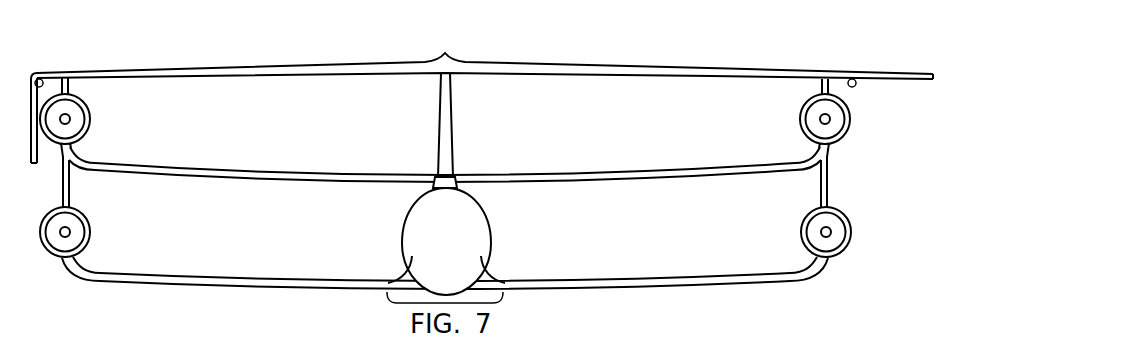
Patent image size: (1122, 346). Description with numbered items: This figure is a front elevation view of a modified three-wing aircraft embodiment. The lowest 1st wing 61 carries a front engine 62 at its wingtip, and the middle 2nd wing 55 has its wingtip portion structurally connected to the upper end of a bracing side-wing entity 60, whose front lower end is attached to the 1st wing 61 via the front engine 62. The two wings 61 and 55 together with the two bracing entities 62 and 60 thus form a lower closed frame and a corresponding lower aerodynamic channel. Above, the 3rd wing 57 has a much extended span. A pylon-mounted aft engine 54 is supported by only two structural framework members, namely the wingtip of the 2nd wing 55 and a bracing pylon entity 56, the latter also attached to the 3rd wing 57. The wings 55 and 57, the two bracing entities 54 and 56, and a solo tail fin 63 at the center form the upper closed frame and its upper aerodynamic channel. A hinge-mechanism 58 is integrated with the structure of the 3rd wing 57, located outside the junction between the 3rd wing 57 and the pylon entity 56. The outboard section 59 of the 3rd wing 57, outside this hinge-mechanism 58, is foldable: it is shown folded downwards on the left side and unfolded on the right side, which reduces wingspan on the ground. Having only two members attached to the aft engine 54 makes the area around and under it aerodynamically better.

The aft engine 54 is at (835, 125).
The 2nd wing 55 is at (707, 170).
The bracing pylon entity 56 is at (822, 88).
The 3rd wing 57 is at (450, 45).
The hinge-mechanism 58 is at (854, 88).
The outboard section of the 3rd wing 59 is at (933, 66).
The bracing side-wing entity 60 is at (822, 182).
The 1st wing 61 is at (650, 280).
The front engine 62 is at (812, 228).
The solo tail fin 63 is at (446, 107).